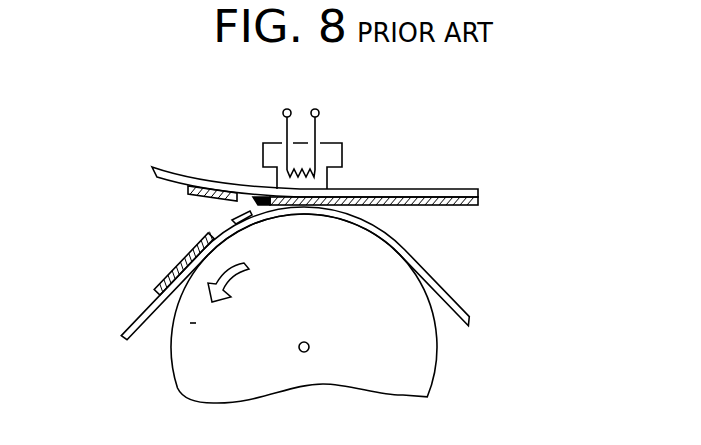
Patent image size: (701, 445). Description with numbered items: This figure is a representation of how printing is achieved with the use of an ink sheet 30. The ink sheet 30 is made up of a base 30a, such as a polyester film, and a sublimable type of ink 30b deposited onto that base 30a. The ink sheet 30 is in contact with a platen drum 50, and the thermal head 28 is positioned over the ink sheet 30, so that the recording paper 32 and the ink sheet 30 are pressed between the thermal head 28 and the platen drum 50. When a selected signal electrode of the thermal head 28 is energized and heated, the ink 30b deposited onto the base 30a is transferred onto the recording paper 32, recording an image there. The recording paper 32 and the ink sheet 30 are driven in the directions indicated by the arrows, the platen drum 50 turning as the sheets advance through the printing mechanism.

The thermal head 28 is at (343, 146).
The ink sheet 30 is at (322, 205).
The base 30a is at (480, 189).
The ink 30b is at (477, 207).
The recording paper 32 is at (469, 318).
The platen drum 50 is at (432, 382).